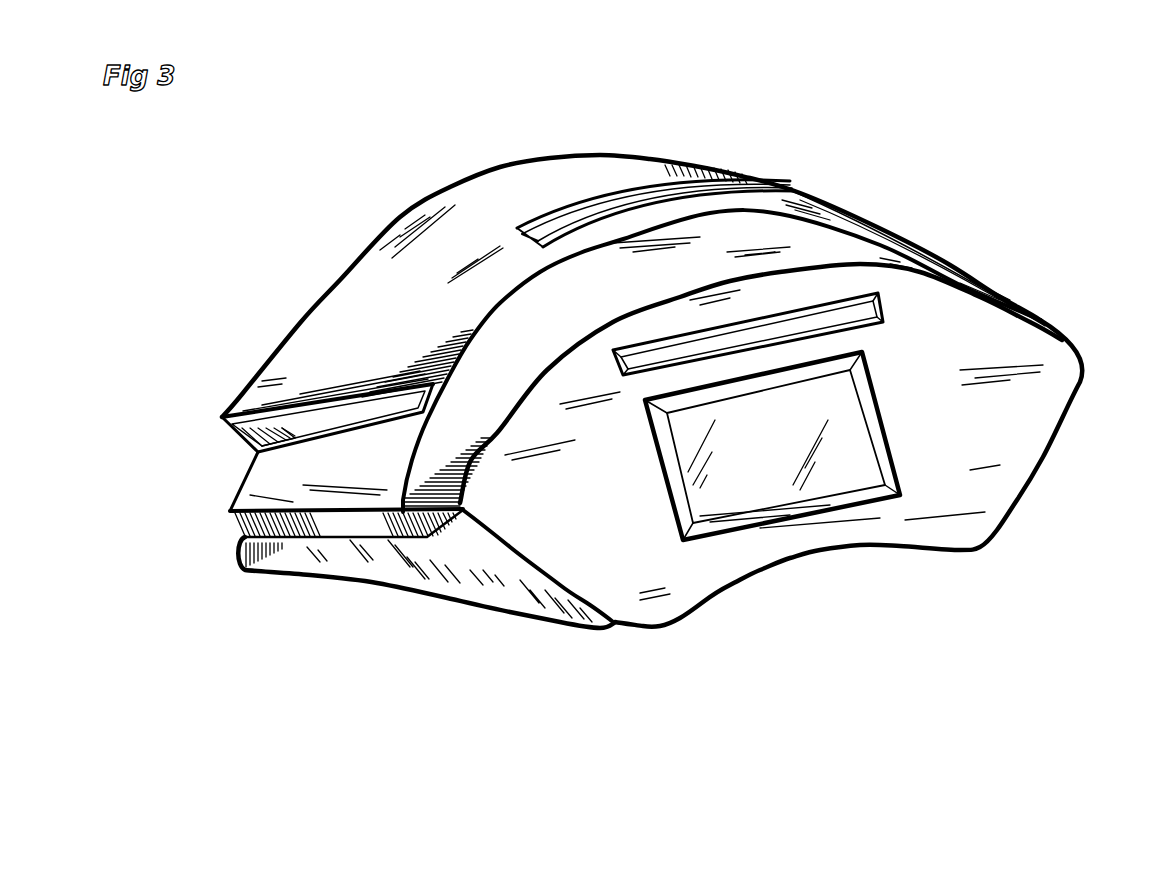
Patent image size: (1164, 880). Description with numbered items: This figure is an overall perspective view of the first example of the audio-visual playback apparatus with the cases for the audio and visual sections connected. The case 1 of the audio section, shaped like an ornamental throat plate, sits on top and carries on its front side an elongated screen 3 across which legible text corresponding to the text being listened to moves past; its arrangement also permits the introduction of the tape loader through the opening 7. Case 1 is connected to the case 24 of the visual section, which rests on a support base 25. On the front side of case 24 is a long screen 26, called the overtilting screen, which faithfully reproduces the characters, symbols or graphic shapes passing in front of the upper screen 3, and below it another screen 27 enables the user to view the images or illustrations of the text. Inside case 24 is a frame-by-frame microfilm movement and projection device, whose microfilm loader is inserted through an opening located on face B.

The case 1 is at (465, 205).
The elongated screen 3 is at (650, 192).
The opening 7 is at (255, 450).
The case 24 is at (1007, 490).
The support base 25 is at (407, 568).
The long screen 26 is at (815, 322).
The screen 27 is at (835, 400).
The face B is at (1045, 460).